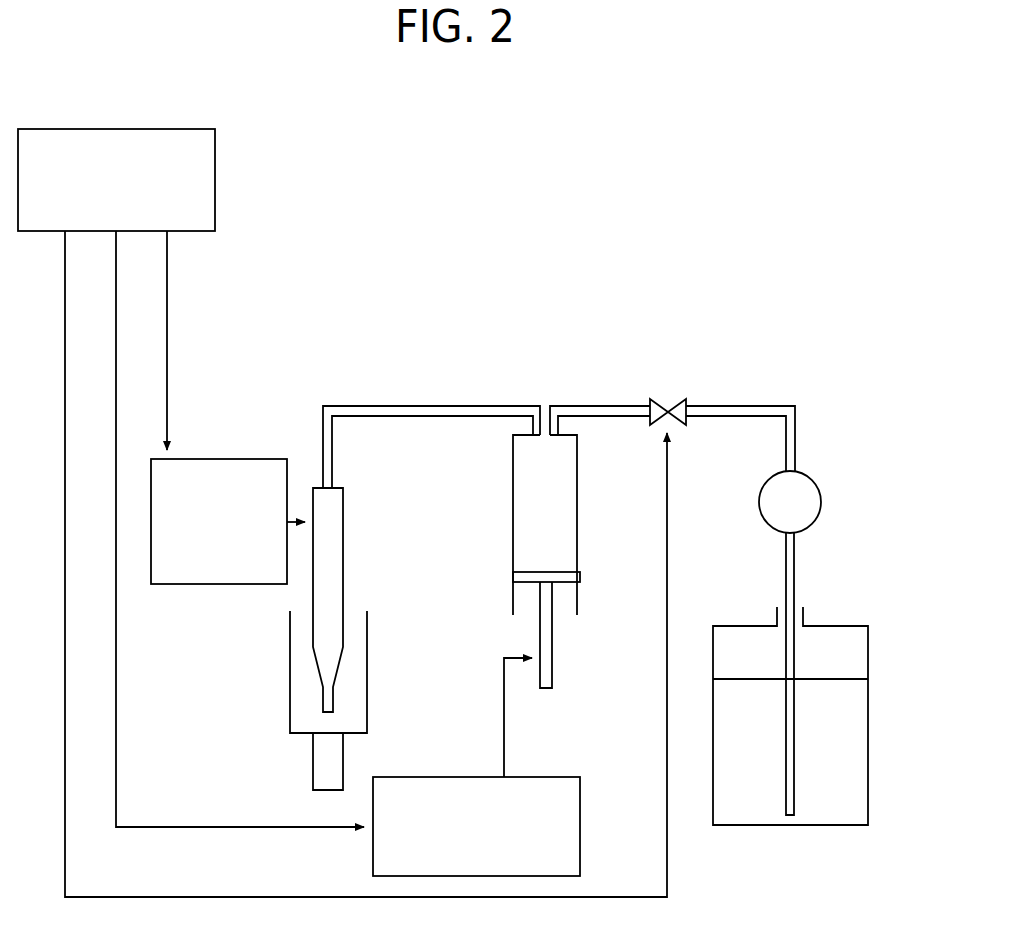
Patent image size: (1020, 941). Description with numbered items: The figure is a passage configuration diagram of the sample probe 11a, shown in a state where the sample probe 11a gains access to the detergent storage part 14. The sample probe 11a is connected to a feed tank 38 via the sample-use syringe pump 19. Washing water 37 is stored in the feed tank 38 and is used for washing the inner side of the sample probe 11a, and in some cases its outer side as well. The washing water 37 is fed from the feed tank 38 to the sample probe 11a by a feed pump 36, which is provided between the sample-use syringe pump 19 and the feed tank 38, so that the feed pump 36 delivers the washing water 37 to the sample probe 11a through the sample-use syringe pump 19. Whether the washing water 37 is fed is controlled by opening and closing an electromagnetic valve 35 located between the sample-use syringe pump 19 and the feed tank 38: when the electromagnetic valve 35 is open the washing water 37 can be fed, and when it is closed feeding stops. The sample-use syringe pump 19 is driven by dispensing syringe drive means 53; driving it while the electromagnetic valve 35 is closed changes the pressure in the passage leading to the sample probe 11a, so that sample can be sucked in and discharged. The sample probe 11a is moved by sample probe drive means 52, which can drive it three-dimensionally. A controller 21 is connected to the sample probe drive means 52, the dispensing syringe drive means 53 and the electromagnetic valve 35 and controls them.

The controller 21 is at (215, 177).
The sample probe drive means 52 is at (218, 459).
The sample probe 11a is at (343, 570).
The detergent storage part 14 is at (290, 677).
The sample-use syringe pump 19 is at (525, 588).
The dispensing syringe drive means 53 is at (542, 777).
The electromagnetic valve 35 is at (683, 402).
The feed pump 36 is at (807, 472).
The washing water 37 is at (850, 780).
The feed tank 38 is at (868, 650).